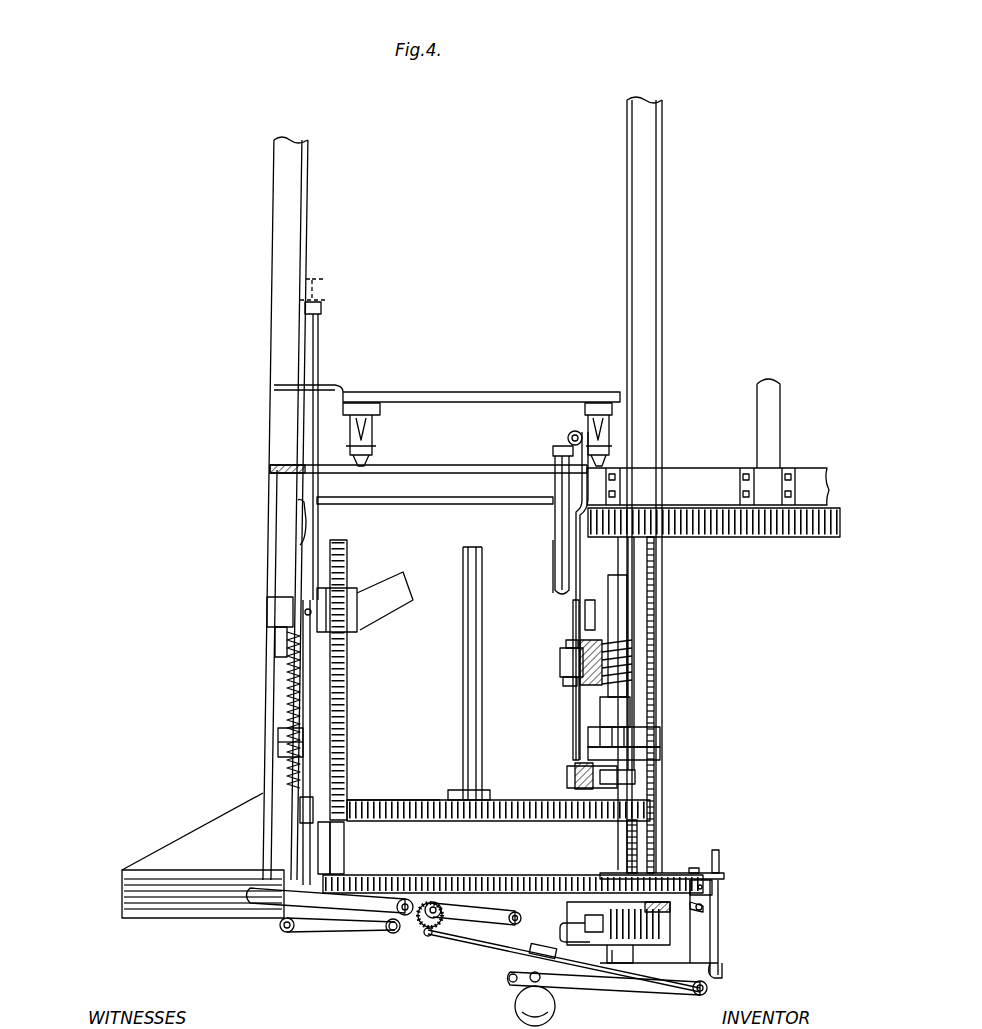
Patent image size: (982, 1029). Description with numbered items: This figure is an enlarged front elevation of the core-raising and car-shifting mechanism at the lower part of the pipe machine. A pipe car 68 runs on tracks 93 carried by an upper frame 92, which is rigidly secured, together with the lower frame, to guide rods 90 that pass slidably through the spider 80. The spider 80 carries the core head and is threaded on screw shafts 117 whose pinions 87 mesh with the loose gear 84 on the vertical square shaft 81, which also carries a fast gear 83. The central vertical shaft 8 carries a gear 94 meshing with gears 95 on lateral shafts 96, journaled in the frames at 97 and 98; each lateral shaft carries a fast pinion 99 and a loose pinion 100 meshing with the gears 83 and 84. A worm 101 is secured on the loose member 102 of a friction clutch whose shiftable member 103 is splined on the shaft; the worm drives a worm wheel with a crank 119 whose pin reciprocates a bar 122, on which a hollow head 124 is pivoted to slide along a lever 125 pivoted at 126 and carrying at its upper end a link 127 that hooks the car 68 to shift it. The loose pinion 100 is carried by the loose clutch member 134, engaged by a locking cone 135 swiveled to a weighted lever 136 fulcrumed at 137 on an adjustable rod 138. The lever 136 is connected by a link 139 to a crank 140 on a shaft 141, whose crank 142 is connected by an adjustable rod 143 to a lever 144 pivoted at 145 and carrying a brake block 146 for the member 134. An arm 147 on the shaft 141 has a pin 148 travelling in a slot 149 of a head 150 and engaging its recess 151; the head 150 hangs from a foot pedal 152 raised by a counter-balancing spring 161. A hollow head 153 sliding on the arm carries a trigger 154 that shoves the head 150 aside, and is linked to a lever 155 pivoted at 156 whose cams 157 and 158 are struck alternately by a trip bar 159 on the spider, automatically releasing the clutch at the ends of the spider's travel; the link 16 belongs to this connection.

The central vertical shaft 8 is at (775, 415).
The link 16 is at (345, 928).
The pipe car 68 is at (482, 392).
The spider 80 is at (388, 605).
The vertical square shaft 81 is at (464, 672).
The fast gear 83 is at (402, 800).
The loose gear 84 is at (445, 790).
The pinions 87 is at (360, 870).
The guide rods 90 is at (554, 527).
The upper frame 92 is at (432, 498).
The tracks 93 is at (362, 466).
The gear 94 is at (760, 535).
The gears 95 is at (640, 537).
The lateral shafts 96 is at (655, 574).
The journal 97 is at (640, 845).
The journal 98 is at (645, 478).
The fast pinion 99 is at (650, 810).
The loose pinion 100 is at (655, 873).
The worm 101 is at (640, 658).
The loose clutch member 102 is at (662, 732).
The shiftable clutch member 103 is at (662, 754).
The screw shafts 117 is at (348, 680).
The crank 119 is at (575, 640).
The reciprocating bar 122 is at (562, 680).
The hollow head 124 is at (560, 661).
The lever 125 is at (568, 600).
The pivot 126 is at (568, 772).
The link 127 is at (568, 438).
The loose clutch member 134 is at (690, 927).
The locking cone 135 is at (633, 955).
The weighted lever 136 is at (665, 975).
The fulcrum 137 is at (724, 973).
The adjustable rod 138 is at (720, 950).
The link 139 is at (575, 924).
The crank 140 is at (503, 900).
The shaft 141 is at (425, 928).
The crank 142 is at (445, 940).
The adjustable rod 143 is at (515, 984).
The lever 144 is at (706, 910).
The pivot 145 is at (720, 862).
The brake block 146 is at (712, 888).
The arm 147 is at (255, 905).
The pin 148 is at (287, 932).
The slot 149 is at (340, 833).
The head 150 is at (345, 845).
The recess 151 is at (278, 875).
The foot pedal 152 is at (320, 348).
The hollow head 153 is at (393, 930).
The trigger 154 is at (390, 933).
The lever 155 is at (285, 818).
The pivot 156 is at (276, 640).
The cam 157 is at (278, 742).
The cam 158 is at (306, 530).
The trip bar 159 is at (268, 612).
The counter-balancing spring 161 is at (288, 694).